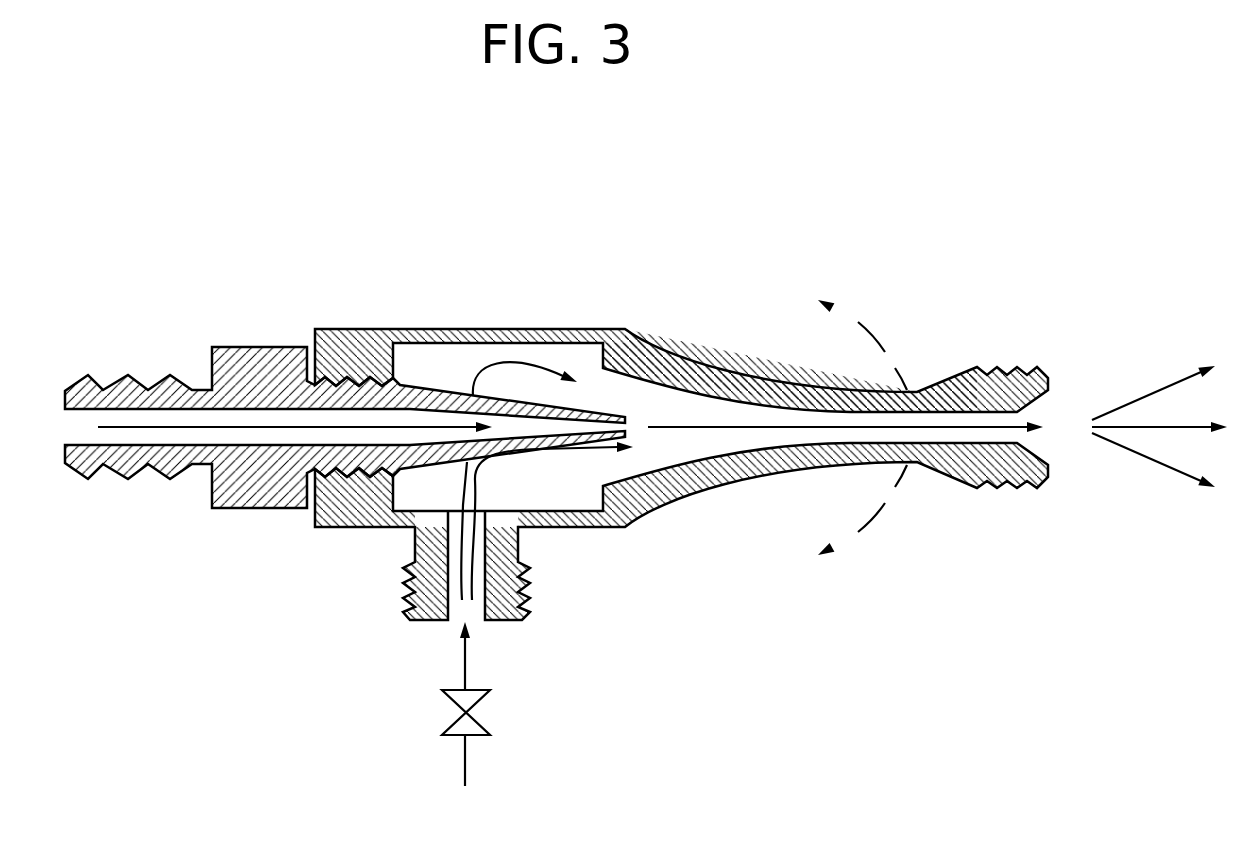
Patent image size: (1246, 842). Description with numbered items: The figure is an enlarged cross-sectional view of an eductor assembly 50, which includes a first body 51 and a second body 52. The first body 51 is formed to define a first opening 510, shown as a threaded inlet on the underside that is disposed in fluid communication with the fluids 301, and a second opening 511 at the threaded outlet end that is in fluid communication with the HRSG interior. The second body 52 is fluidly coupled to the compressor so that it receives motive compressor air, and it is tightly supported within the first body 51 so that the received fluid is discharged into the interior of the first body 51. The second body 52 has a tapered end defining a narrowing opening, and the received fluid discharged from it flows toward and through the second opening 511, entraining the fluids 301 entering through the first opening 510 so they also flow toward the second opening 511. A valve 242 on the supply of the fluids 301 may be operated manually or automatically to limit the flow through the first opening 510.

The eductor assembly 50 is at (296, 528).
The first body 51 is at (743, 477).
The second body 52 is at (88, 374).
The first opening 510 is at (440, 620).
The second opening 511 is at (1033, 364).
The valve 242 is at (488, 712).
The fluids 301 is at (467, 776).